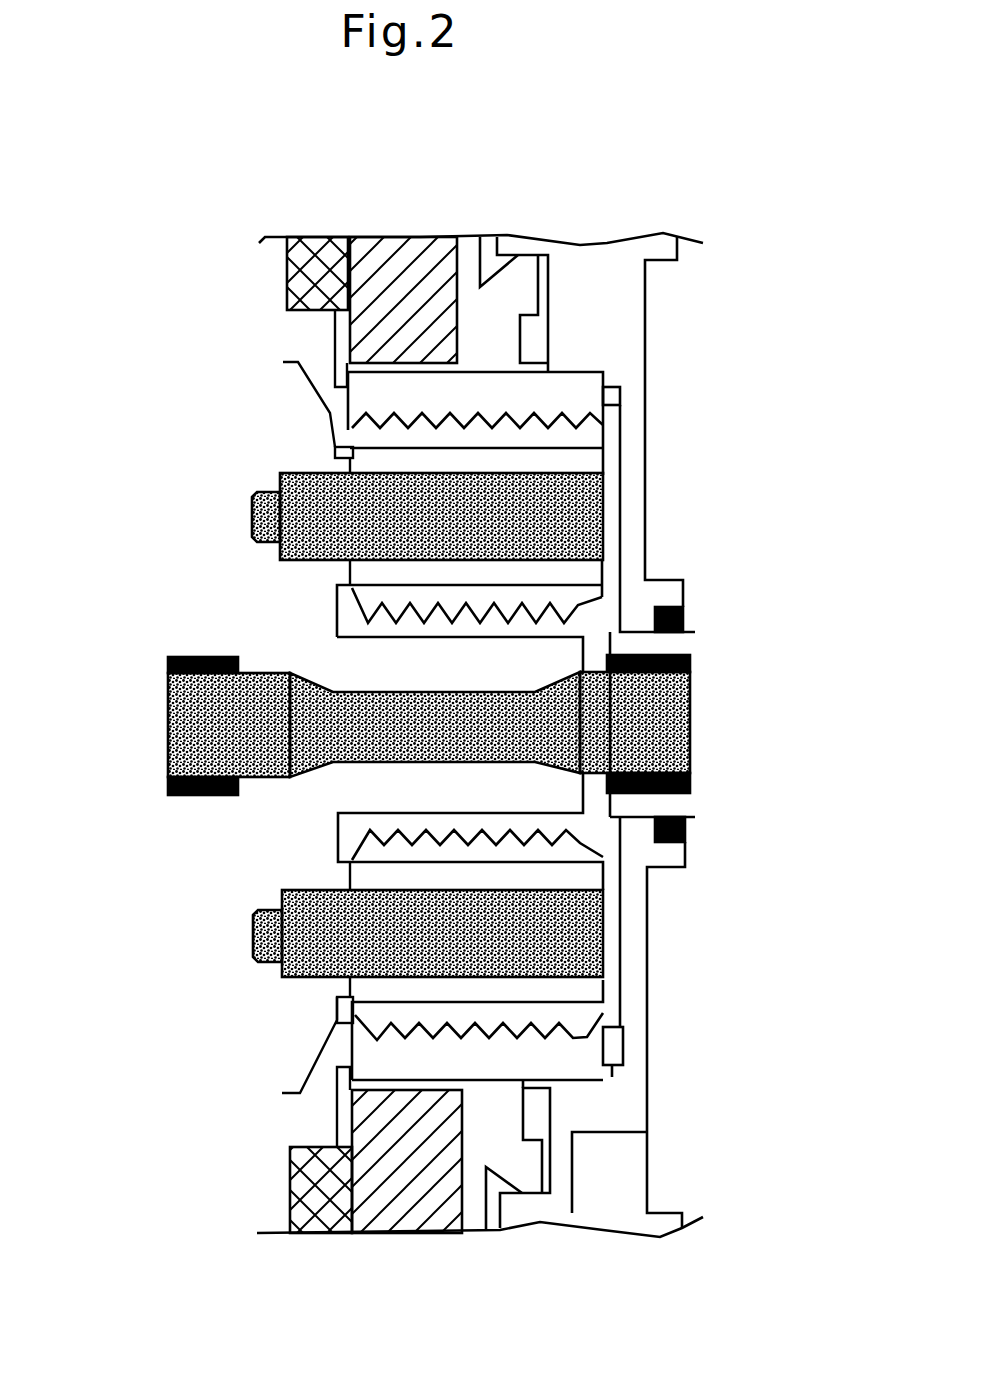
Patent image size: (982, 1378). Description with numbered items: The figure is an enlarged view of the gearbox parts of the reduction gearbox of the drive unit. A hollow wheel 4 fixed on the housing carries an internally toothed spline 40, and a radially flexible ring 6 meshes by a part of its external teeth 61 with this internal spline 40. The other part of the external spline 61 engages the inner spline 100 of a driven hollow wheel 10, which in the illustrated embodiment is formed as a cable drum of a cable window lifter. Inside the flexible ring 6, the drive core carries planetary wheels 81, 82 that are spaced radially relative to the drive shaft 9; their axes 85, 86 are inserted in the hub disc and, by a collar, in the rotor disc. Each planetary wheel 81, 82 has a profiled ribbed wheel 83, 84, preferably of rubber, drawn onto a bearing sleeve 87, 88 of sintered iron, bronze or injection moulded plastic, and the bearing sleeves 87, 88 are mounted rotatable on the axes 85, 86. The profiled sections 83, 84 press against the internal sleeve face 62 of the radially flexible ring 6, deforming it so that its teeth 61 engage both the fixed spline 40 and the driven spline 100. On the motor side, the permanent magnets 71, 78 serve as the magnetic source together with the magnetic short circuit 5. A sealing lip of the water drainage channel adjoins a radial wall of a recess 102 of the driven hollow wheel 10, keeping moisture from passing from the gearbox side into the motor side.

The hollow wheel fixed on the housing 4 is at (337, 337).
The magnetic short circuit 5 is at (405, 281).
The radially flexible ring 6 is at (455, 610).
The drive shaft 9 is at (235, 725).
The driven hollow wheel 10 is at (612, 295).
The internally toothed spline 40 is at (381, 384).
The external teeth 61 is at (489, 348).
The internal sleeve face 62 is at (534, 440).
The permanent magnet 71 is at (318, 272).
The permanent magnet 78 is at (317, 1195).
The planetary wheel 81 is at (436, 519).
The planetary wheel 82 is at (440, 925).
The profiled ribbed wheel 83 is at (422, 640).
The profiled ribbed wheel 84 is at (437, 809).
The axis 85 is at (360, 512).
The axis 86 is at (325, 942).
The bearing sleeve 87 is at (388, 457).
The bearing sleeve 88 is at (388, 877).
The inner spline 100 is at (596, 390).
The recess 102 is at (531, 328).